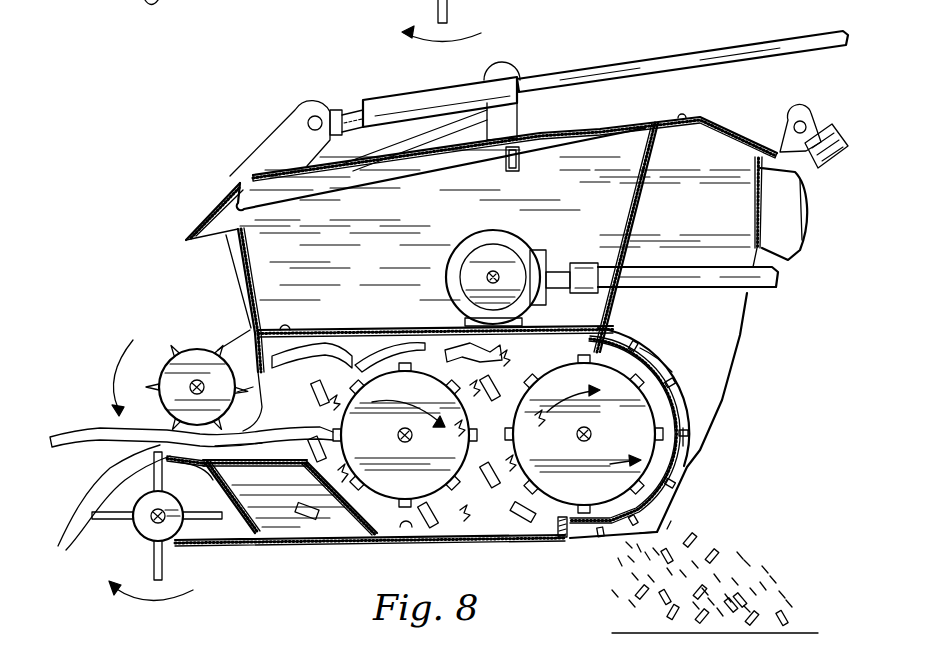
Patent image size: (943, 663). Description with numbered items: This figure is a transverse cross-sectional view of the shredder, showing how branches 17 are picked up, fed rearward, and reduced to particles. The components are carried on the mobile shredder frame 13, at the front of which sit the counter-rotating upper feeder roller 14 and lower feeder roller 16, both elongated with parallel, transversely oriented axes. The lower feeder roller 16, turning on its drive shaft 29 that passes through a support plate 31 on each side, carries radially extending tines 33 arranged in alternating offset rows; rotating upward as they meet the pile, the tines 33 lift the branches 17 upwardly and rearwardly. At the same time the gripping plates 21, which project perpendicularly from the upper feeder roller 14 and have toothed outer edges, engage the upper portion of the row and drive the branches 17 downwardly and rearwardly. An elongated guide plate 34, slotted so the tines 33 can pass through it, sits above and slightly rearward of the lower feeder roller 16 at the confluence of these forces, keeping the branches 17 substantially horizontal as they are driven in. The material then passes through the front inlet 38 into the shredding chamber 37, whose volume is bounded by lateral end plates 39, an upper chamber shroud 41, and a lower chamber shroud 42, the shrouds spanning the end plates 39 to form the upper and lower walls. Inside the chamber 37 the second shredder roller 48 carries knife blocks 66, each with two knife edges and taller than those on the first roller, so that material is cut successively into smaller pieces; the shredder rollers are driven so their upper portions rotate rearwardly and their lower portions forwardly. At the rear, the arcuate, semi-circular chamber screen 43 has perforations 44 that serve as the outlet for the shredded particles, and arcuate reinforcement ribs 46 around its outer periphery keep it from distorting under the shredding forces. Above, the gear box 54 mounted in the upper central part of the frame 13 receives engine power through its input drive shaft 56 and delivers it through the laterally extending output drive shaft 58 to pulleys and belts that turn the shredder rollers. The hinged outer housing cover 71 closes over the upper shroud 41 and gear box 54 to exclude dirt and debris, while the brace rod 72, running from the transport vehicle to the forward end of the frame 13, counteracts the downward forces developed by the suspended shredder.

The mobile shredder frame 13 is at (474, 330).
The upper feeder roller 14 is at (182, 358).
The lower feeder roller 16 is at (283, 301).
The branches 17 is at (356, 367).
The gripping plates 21 is at (147, 386).
The drive shaft 29 is at (249, 331).
The support plate 31 is at (228, 538).
The tines 33 is at (168, 570).
The guide plate 34 is at (188, 465).
The shredding chamber 37 is at (371, 350).
The front inlet 38 is at (273, 460).
The lateral end plates 39 is at (484, 518).
The upper chamber shroud 41 is at (330, 344).
The lower chamber shroud 42 is at (405, 527).
The chamber screen 43 is at (688, 410).
The perforations 44 is at (700, 448).
The arcuate reinforcement ribs 46 is at (655, 366).
The second shredder roller 48 is at (692, 477).
The gear box 54 is at (508, 261).
The input drive shaft 56 is at (665, 266).
The output drive shaft 58 is at (498, 277).
The knife blocks 66 is at (688, 436).
The outer housing cover 71 is at (604, 124).
The brace rod 72 is at (724, 50).